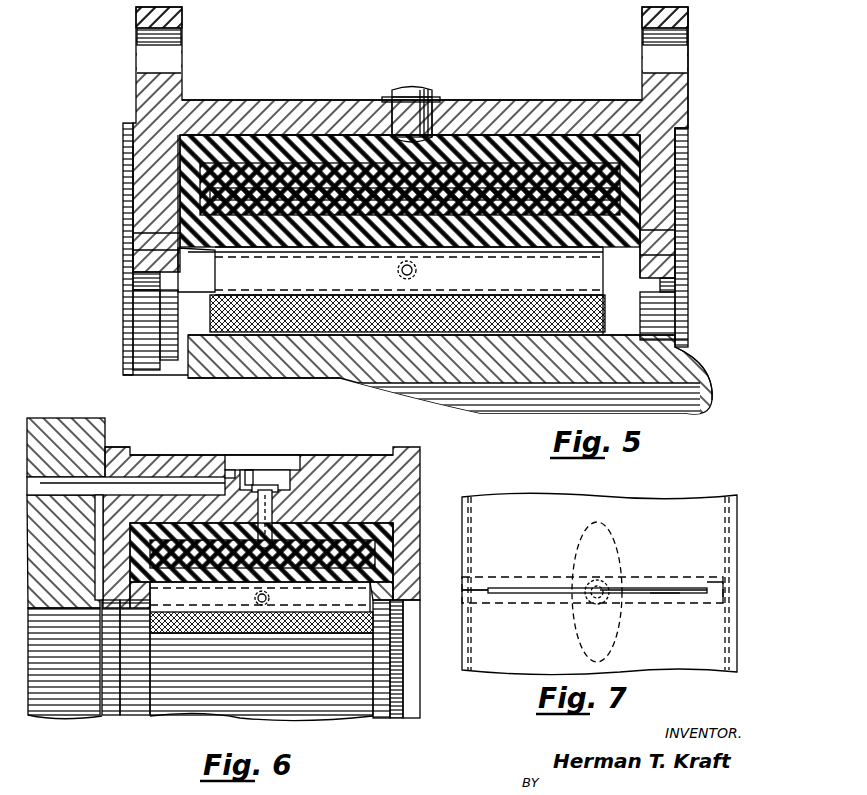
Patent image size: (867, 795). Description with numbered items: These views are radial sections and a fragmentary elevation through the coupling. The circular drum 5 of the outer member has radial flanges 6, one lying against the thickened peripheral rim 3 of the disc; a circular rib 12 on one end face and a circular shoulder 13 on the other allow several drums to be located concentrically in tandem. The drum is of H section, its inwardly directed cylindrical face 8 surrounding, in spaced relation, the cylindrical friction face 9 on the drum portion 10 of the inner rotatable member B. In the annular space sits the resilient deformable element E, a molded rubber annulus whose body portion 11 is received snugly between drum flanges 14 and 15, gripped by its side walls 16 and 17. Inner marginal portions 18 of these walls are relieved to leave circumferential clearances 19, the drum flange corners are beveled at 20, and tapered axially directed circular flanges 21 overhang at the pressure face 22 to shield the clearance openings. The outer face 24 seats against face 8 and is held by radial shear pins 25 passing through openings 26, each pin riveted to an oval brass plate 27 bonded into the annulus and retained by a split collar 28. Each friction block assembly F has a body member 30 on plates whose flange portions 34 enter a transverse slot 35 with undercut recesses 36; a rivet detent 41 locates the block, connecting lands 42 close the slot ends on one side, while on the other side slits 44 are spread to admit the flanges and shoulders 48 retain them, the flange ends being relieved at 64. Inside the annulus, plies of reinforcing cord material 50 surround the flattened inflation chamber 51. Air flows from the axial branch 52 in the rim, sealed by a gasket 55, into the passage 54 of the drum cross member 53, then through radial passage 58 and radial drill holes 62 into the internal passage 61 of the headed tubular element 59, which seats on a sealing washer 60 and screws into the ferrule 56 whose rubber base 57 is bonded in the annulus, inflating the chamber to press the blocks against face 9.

In FIG. 6, the thickened peripheral rim 3 is at (50, 425).
In FIG. 5, the circular drum 5 is at (517, 74).
In FIG. 5, the radial flanges 6 is at (138, 22).
In FIG. 5, the cylindrical face 8 is at (410, 191).
In FIG. 5, the cylindrical friction face 9 is at (498, 337).
In FIG. 6, the cylindrical friction face 9 is at (80, 600).
In FIG. 5, the drum portion 10 is at (563, 378).
In FIG. 5, the body portion 11 is at (530, 232).
In FIG. 5, the circular rib 12 is at (124, 130).
In FIG. 5, the circular shoulder 13 is at (690, 137).
In FIG. 5, the drum flange 14 is at (150, 206).
In FIG. 5, the drum flange 15 is at (655, 200).
In FIG. 6, the drum flange 15 is at (412, 570).
In FIG. 5, the annulus side wall 16 is at (180, 176).
In FIG. 5, the annulus side wall 17 is at (689, 165).
In FIG. 5, the inner marginal portions 18 is at (185, 234).
In FIG. 5, the circumferential clearances 19 is at (180, 250).
In FIG. 5, the beveled edge corners 20 is at (152, 288).
In FIG. 5, the axially directed circular flanges 21 is at (160, 346).
In FIG. 7, the axially directed circular flanges 21 is at (737, 537).
In FIG. 7, the pressure face 22 is at (651, 542).
In FIG. 5, the outer face 24 is at (588, 130).
In FIG. 5, the shear pins 25 is at (392, 120).
In FIG. 7, the shear pins 25 is at (585, 582).
In FIG. 5, the openings 26 is at (405, 100).
In FIG. 5, the plates 27 is at (440, 125).
In FIG. 7, the plates 27 is at (618, 640).
In FIG. 5, the split collars 28 is at (432, 97).
In FIG. 5, the body member 30 is at (450, 374).
In FIG. 5, the flange portions 34 is at (350, 280).
In FIG. 7, the transverse slot 35 is at (660, 590).
In FIG. 5, the undercut recesses 36 is at (305, 248).
In FIG. 7, the undercut recesses 36 is at (672, 602).
In FIG. 5, the rivet detent 41 is at (418, 271).
In FIG. 5, the connecting lands 42 is at (676, 312).
In FIG. 7, the connecting lands 42 is at (712, 580).
In FIG. 5, the slits 44 is at (148, 322).
In FIG. 7, the slits 44 is at (478, 592).
In FIG. 7, the shoulders 48 is at (500, 588).
In FIG. 5, the reinforcing cord material 50 is at (268, 150).
In FIG. 6, the reinforcing cord material 50 is at (264, 485).
In FIG. 5, the inflation chamber 51 is at (554, 157).
In FIG. 6, the inflation chamber 51 is at (261, 543).
In FIG. 6, the axial branch 52 is at (63, 551).
In FIG. 6, the cross member 53 is at (340, 455).
In FIG. 6, the passage 54 is at (160, 480).
In FIG. 6, the gasket 55 is at (106, 447).
In FIG. 6, the ferrule 56 is at (339, 507).
In FIG. 6, the rubber base 57 is at (206, 514).
In FIG. 6, the radial passage 58 is at (278, 473).
In FIG. 6, the headed tubular element 59 is at (270, 462).
In FIG. 6, the sealing washer 60 is at (246, 470).
In FIG. 6, the internal passage 61 is at (284, 519).
In FIG. 6, the radial drill holes 62 is at (226, 470).
In FIG. 5, the relieved flange ends 64 is at (216, 276).
In FIG. 5, the resilient deformable element E is at (540, 140).
In FIG. 6, the resilient deformable element E is at (414, 526).
In FIG. 7, the resilient deformable element E is at (710, 500).
In FIG. 5, the inner rotatable member B is at (708, 380).
In FIG. 6, the friction block assemblies F is at (212, 690).